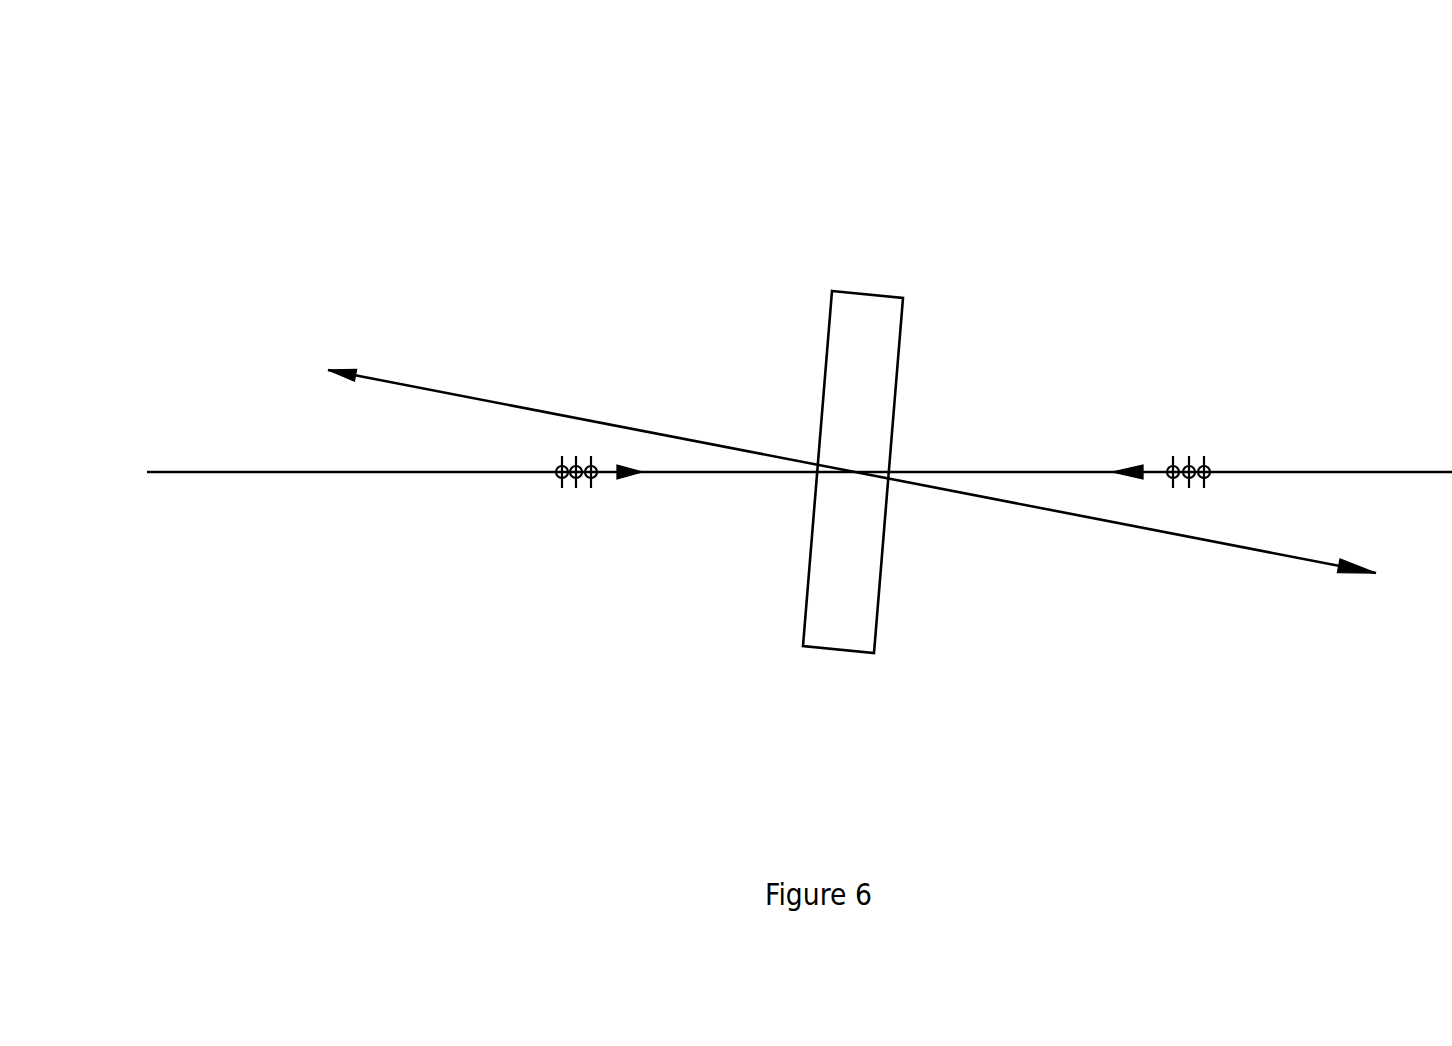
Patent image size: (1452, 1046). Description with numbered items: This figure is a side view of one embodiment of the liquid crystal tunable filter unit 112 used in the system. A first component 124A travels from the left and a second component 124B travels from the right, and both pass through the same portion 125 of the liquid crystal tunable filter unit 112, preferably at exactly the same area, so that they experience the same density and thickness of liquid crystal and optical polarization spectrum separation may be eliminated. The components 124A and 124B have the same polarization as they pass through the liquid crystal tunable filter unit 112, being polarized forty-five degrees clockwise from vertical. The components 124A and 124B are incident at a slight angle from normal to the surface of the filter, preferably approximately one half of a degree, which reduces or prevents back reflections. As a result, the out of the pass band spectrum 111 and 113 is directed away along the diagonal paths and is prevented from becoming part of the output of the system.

The liquid crystal tunable filter unit 112 is at (823, 78).
The out of the pass band spectrum 111 is at (590, 422).
The out of the pass band spectrum 113 is at (1110, 517).
The first component 124A is at (697, 473).
The second component 124B is at (968, 472).
The portion of the liquid crystal tunable filter unit 125 is at (853, 497).